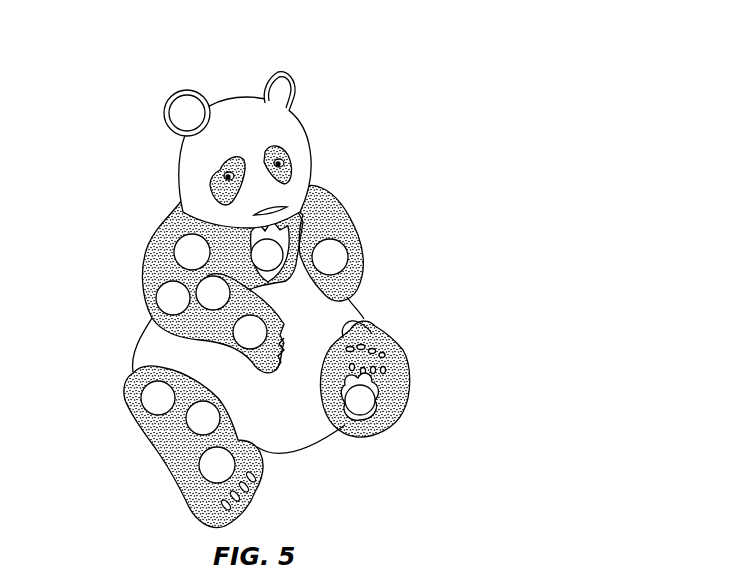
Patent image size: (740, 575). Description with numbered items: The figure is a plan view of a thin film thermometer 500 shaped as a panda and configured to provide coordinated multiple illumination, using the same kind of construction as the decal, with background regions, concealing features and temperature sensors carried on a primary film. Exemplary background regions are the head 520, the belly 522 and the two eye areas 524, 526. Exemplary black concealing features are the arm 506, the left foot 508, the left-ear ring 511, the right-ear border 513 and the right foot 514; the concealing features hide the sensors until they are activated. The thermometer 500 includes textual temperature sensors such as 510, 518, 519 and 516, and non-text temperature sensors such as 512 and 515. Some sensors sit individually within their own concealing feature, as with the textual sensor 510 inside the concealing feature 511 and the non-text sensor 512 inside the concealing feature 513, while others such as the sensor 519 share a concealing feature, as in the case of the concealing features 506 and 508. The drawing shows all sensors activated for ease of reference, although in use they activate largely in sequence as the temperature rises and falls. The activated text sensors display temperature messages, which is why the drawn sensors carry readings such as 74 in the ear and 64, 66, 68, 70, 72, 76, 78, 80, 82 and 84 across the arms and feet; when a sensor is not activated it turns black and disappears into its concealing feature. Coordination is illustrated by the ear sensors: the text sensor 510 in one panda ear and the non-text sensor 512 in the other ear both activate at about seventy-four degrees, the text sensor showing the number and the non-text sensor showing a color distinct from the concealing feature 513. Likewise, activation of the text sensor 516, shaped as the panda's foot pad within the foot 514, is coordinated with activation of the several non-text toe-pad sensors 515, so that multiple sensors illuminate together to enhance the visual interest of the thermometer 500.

The thin film thermometer 500 is at (347, 35).
The concealing feature 506 is at (348, 243).
The concealing feature 508 is at (193, 447).
The textual temperature sensor 510 is at (154, 95).
The concealing feature 511 is at (167, 118).
The non-text temperature sensor 512 is at (274, 81).
The concealing feature 513 is at (304, 84).
The concealing feature 514 is at (406, 392).
The non-text temperature sensors 515 is at (410, 360).
The textual temperature sensor 516 is at (406, 384).
The textual temperature sensor 518 is at (186, 286).
The textual temperature sensor 519 is at (156, 437).
The background region 520 is at (273, 139).
The background region 522 is at (303, 409).
The background region 524 is at (288, 151).
The background region 526 is at (216, 166).
The sensor 64 is at (185, 494).
The sensor 66 is at (393, 419).
The sensor 68 is at (330, 257).
The sensor 70 is at (270, 251).
The sensor 72 is at (192, 252).
The sensor 74 is at (186, 90).
The sensor 76 is at (173, 298).
The sensor 78 is at (213, 293).
The sensor 80 is at (250, 332).
The sensor 82 is at (203, 418).
The sensor 84 is at (158, 398).